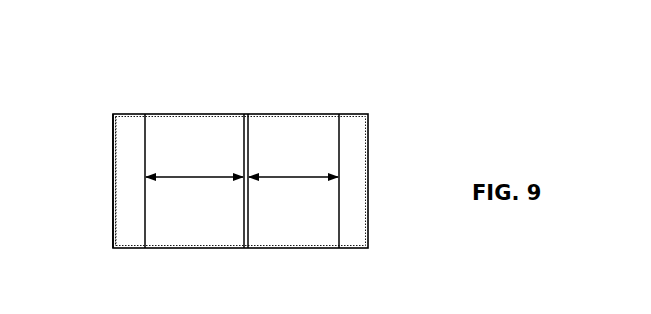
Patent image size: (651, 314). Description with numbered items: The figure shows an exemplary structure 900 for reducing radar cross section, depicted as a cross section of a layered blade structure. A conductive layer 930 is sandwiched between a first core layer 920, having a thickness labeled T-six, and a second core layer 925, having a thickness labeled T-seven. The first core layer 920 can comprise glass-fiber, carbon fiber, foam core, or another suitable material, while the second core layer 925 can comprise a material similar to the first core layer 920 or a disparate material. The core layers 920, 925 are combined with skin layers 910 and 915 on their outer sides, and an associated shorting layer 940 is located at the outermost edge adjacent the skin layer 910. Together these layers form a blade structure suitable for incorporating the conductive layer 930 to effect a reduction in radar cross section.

The structure 900 is at (124, 50).
The skin layer 910 is at (132, 114).
The skin layer 915 is at (355, 114).
The first core layer 920 is at (180, 249).
The second core layer 925 is at (307, 249).
The conductive layer 930 is at (245, 114).
The shorting layer 940 is at (113, 157).